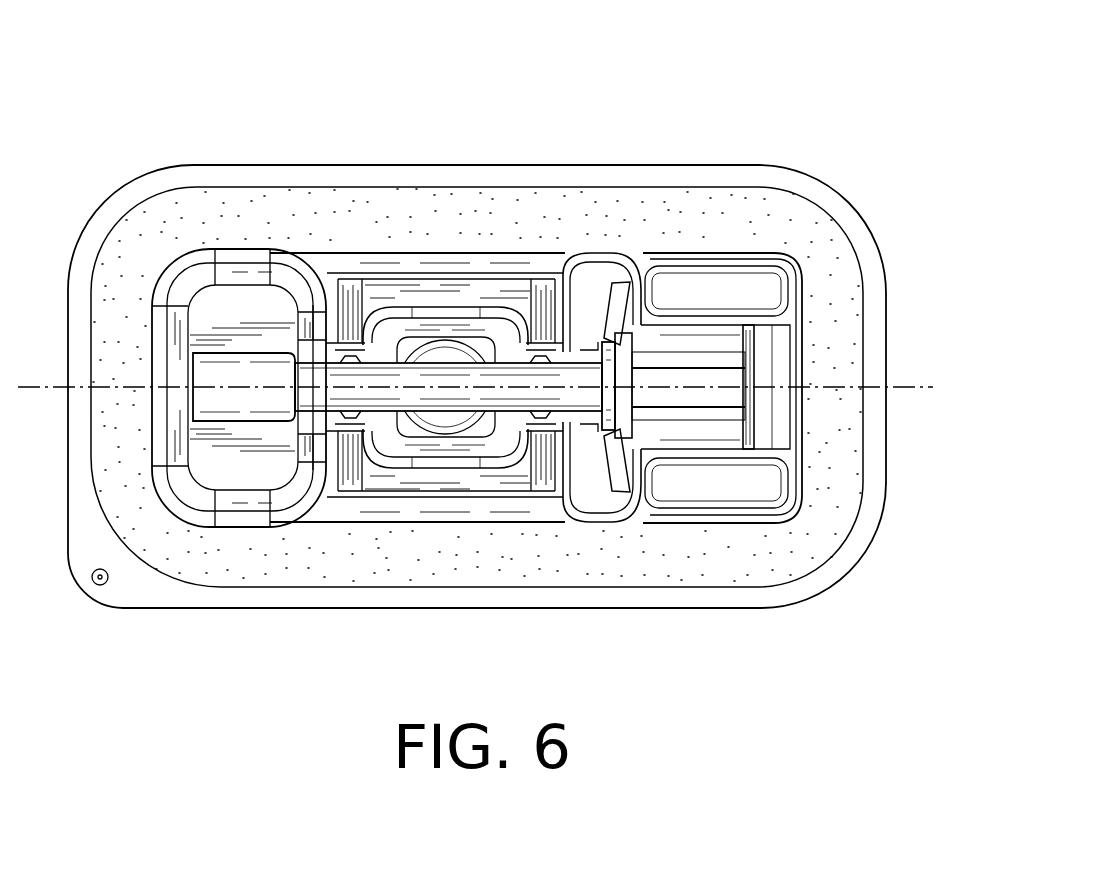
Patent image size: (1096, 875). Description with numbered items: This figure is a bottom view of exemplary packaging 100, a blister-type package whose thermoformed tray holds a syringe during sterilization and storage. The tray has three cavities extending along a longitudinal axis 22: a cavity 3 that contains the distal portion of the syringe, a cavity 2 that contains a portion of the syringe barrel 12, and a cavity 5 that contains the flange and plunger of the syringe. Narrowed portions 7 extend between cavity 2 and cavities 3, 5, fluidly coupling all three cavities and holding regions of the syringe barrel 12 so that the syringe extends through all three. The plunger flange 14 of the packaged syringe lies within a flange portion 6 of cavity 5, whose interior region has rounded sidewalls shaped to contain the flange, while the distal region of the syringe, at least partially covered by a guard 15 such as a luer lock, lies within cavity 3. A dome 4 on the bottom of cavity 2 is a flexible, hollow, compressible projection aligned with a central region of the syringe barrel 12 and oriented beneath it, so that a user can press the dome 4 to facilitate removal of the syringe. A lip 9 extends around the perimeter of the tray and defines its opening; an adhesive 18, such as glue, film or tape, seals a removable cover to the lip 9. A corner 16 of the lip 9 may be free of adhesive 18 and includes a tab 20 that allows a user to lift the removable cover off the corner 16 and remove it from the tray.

The packaging 100 is at (797, 137).
The cavity 2 is at (447, 468).
The cavity 3 is at (217, 315).
The dome 4 is at (427, 332).
The cavity 5 is at (763, 408).
The flange portion 6 is at (603, 277).
The narrowed portions 7 is at (350, 422).
The lip 9 is at (68, 432).
The syringe barrel 12 is at (470, 368).
The plunger flange 14 is at (612, 397).
The guard 15 is at (242, 400).
The corner 16 is at (87, 547).
The adhesive 18 is at (671, 563).
The tab 20 is at (93, 583).
The longitudinal axis 22 is at (912, 386).